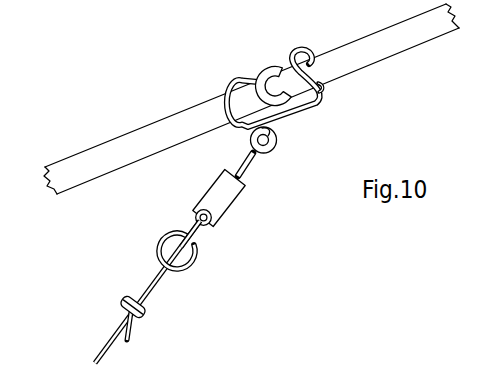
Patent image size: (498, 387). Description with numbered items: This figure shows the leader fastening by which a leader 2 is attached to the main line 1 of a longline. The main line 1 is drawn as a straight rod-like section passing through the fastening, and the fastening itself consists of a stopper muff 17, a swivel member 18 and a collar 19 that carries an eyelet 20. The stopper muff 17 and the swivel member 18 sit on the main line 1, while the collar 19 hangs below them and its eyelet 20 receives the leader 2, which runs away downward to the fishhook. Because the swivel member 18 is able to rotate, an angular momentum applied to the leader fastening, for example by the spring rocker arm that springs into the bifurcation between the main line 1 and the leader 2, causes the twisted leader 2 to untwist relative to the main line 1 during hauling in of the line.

The main line 1 is at (188, 120).
The leader 2 is at (150, 293).
The stopper muff 17 is at (267, 68).
The swivel member 18 is at (233, 77).
The collar 19 is at (218, 211).
The eyelet 20 is at (197, 258).